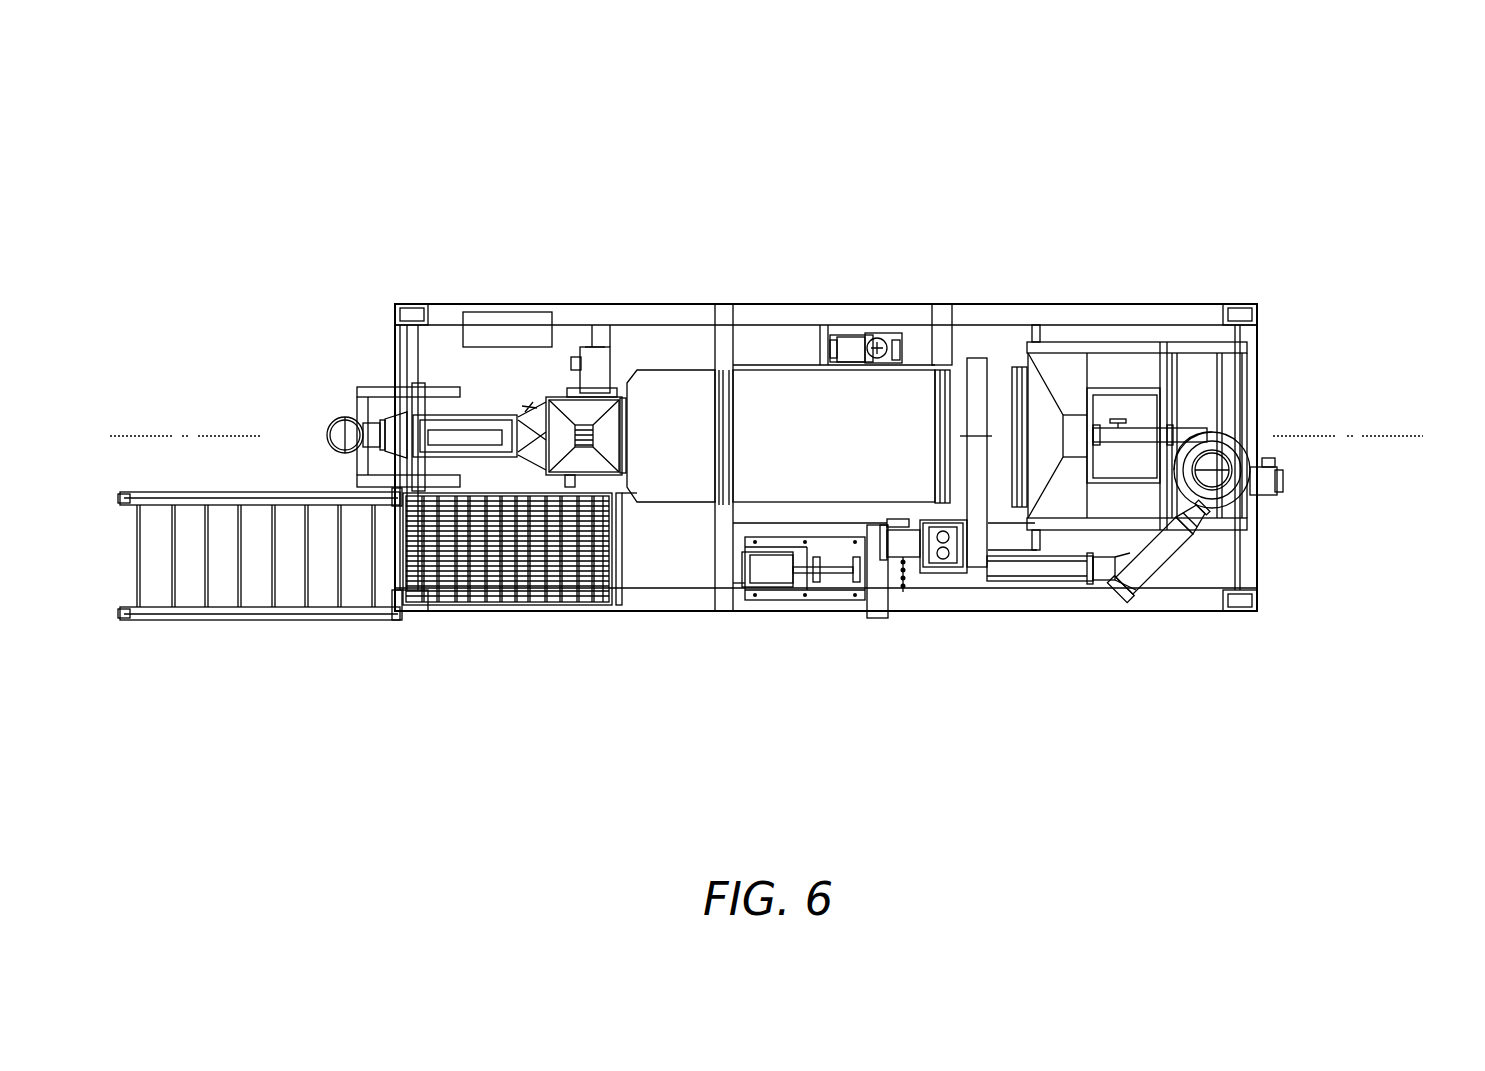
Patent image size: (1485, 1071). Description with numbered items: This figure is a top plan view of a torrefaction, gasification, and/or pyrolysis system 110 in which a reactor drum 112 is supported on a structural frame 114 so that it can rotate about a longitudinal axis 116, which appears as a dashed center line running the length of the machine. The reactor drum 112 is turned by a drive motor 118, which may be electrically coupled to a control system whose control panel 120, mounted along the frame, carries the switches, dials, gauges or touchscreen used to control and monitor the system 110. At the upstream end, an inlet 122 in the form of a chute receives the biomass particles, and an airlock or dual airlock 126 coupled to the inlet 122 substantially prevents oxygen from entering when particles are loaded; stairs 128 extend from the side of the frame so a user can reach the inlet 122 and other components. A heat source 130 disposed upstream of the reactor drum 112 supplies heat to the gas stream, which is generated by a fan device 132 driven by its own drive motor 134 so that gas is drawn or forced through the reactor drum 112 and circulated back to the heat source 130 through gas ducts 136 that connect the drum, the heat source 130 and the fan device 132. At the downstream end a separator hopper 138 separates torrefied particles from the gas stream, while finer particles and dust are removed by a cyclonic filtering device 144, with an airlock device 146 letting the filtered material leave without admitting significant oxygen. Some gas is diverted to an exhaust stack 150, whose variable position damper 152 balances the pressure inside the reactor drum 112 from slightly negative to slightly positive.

The torrefaction, gasification, and/or pyrolysis system 110 is at (878, 92).
The reactor drum 112 is at (678, 453).
The structural frame 114 is at (687, 320).
The longitudinal axis 116 is at (1350, 437).
The drive motor 118 is at (907, 545).
The control panel 120 is at (497, 312).
The inlet 122 is at (582, 408).
The airlock or dual airlock 126 is at (600, 372).
The stairs 128 is at (332, 620).
The heat source 130 is at (453, 423).
The fan device 132 is at (877, 600).
The drive motor 134 is at (775, 567).
The gas ducts 136 is at (326, 434).
The separator hopper 138 is at (1068, 368).
The filtering device 144 is at (1202, 437).
The airlock device 146 is at (1268, 488).
The exhaust stack 150 is at (882, 340).
The variable position damper 152 is at (850, 345).